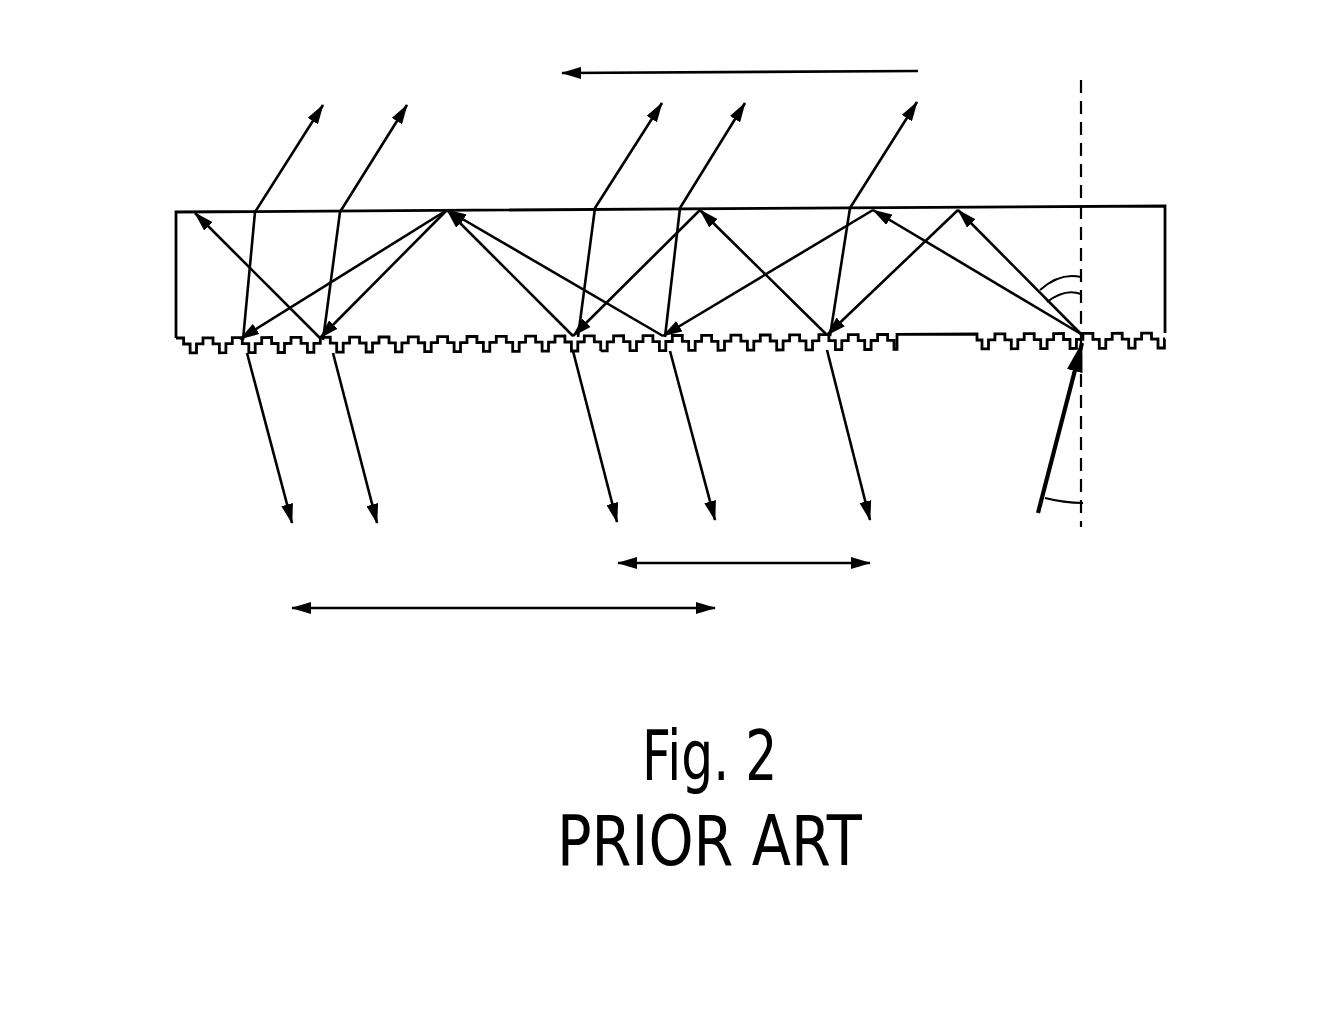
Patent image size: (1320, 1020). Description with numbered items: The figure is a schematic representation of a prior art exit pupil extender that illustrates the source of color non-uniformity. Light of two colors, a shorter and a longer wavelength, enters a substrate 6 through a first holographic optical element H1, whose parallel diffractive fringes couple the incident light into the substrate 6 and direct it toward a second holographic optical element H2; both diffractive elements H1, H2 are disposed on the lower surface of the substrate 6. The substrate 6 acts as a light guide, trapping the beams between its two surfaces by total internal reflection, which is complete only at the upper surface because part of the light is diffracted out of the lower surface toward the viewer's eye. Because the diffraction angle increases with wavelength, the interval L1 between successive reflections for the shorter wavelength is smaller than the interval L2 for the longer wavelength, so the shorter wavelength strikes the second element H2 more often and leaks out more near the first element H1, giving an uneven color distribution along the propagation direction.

The substrate 6 is at (665, 319).
The first HOE H1 is at (1140, 349).
The second HOE H2 is at (208, 353).
The interval for λ1 L1 is at (744, 593).
The interval for λ2 L2 is at (503, 637).